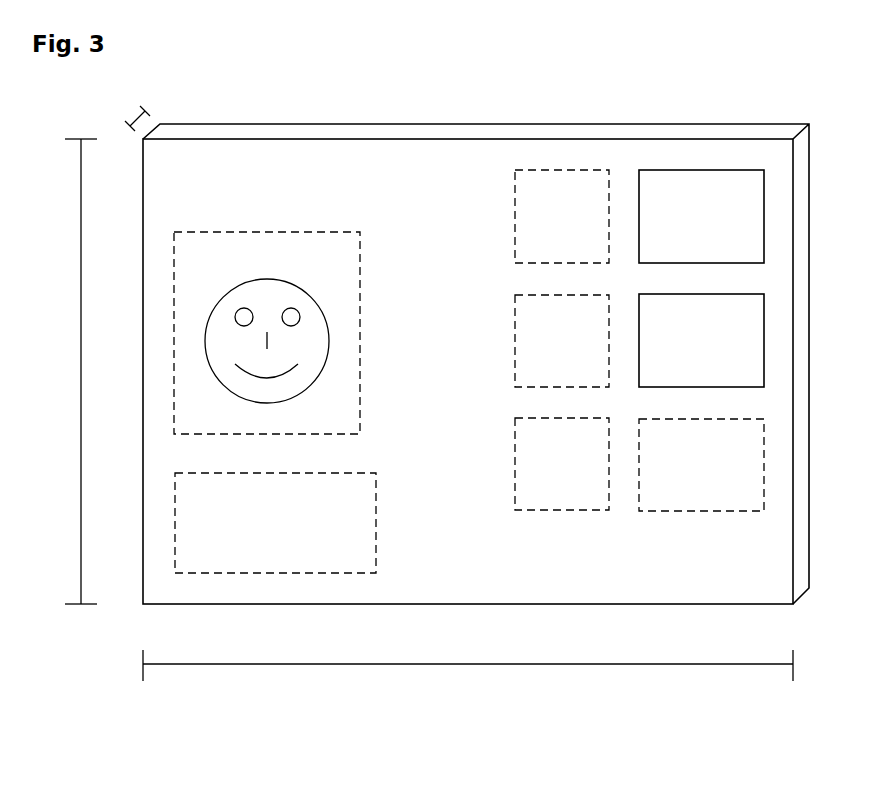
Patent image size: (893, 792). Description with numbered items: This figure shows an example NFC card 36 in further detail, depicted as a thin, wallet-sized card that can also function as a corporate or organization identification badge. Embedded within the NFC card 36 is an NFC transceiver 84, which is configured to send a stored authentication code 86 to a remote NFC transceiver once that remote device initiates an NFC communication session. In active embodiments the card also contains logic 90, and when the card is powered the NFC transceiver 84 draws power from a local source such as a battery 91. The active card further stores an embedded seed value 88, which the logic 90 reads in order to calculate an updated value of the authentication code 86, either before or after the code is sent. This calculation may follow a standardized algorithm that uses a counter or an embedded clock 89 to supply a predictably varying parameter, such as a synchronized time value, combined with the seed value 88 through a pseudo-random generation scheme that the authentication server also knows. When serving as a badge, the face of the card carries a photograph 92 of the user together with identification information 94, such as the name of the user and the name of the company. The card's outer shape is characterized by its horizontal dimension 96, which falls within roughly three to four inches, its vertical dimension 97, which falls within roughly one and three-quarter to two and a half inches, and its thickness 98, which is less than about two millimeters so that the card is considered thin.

The NFC card 36 is at (476, 364).
The NFC transceiver 84 is at (701, 216).
The authentication code 86 is at (701, 340).
The seed value 88 is at (562, 341).
The clock 89 is at (562, 464).
The logic 90 is at (562, 216).
The battery 91 is at (701, 465).
The photograph 92 is at (267, 333).
The identification information 94 is at (368, 473).
The horizontal dimension 96 is at (469, 664).
The vertical dimension 97 is at (81, 370).
The thickness 98 is at (137, 118).